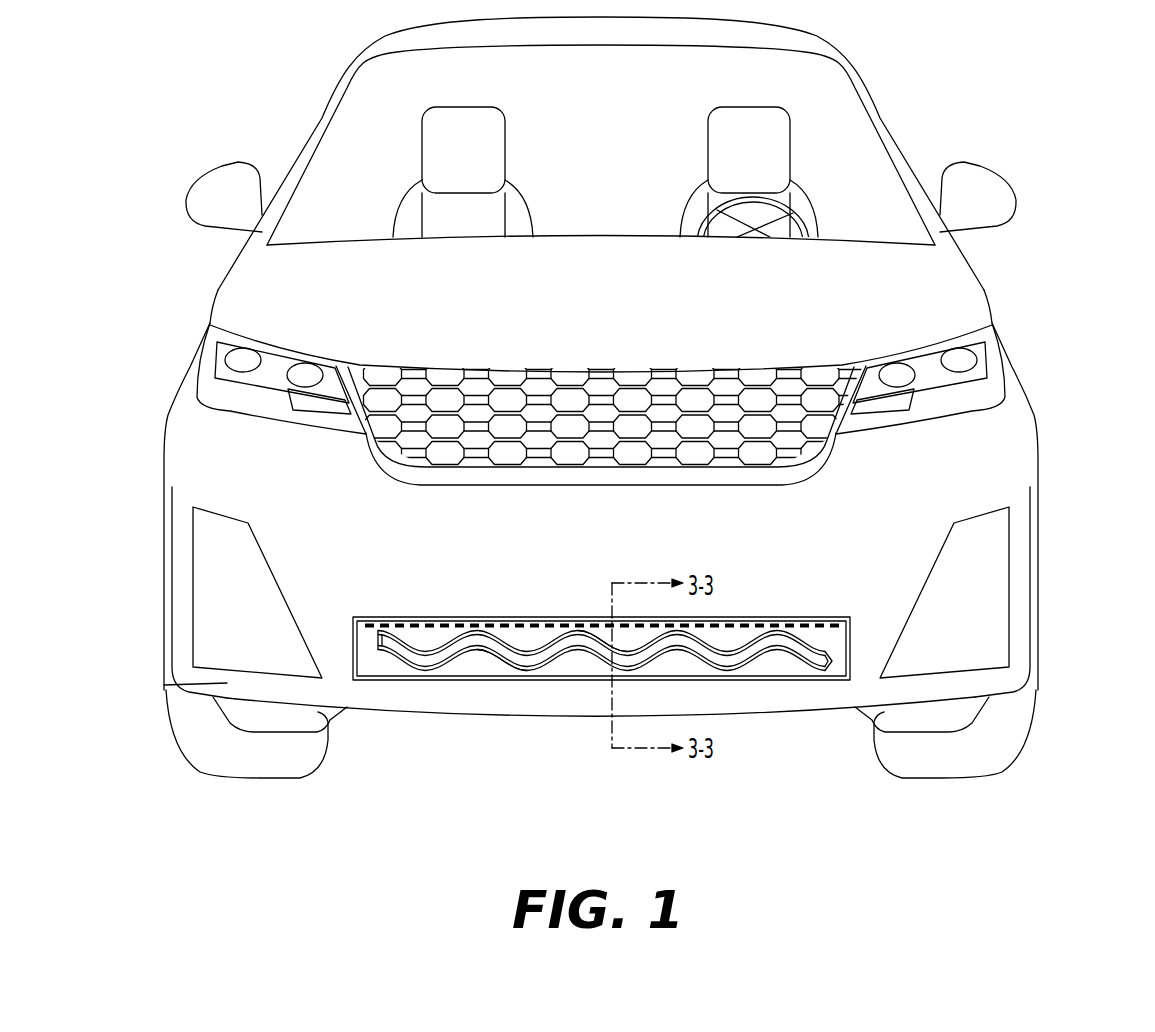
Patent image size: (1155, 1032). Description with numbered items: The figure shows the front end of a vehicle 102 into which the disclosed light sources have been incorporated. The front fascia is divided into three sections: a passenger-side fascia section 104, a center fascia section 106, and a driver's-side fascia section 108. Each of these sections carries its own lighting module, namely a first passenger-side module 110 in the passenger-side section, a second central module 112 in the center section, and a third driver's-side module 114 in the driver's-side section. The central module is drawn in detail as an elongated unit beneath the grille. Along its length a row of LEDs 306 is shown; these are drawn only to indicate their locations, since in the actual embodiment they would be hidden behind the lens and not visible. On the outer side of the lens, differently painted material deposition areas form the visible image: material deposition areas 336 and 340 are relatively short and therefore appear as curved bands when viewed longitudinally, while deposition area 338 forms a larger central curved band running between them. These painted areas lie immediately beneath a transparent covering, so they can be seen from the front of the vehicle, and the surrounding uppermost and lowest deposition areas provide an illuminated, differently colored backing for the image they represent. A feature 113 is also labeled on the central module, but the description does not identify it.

The vehicle 102 is at (937, 305).
The passenger-side fascia section 104 is at (164, 685).
The center fascia section 106 is at (860, 655).
The driver's-side fascia section 108 is at (943, 687).
The first passenger-side module 110 is at (221, 503).
The second central module 112 is at (498, 612).
The sensor housing 113 is at (818, 635).
The third driver's-side module 114 is at (912, 593).
The LEDs 306 is at (755, 625).
The material deposition area 336 is at (593, 636).
The material deposition area 338 is at (587, 657).
The material deposition area 340 is at (493, 672).